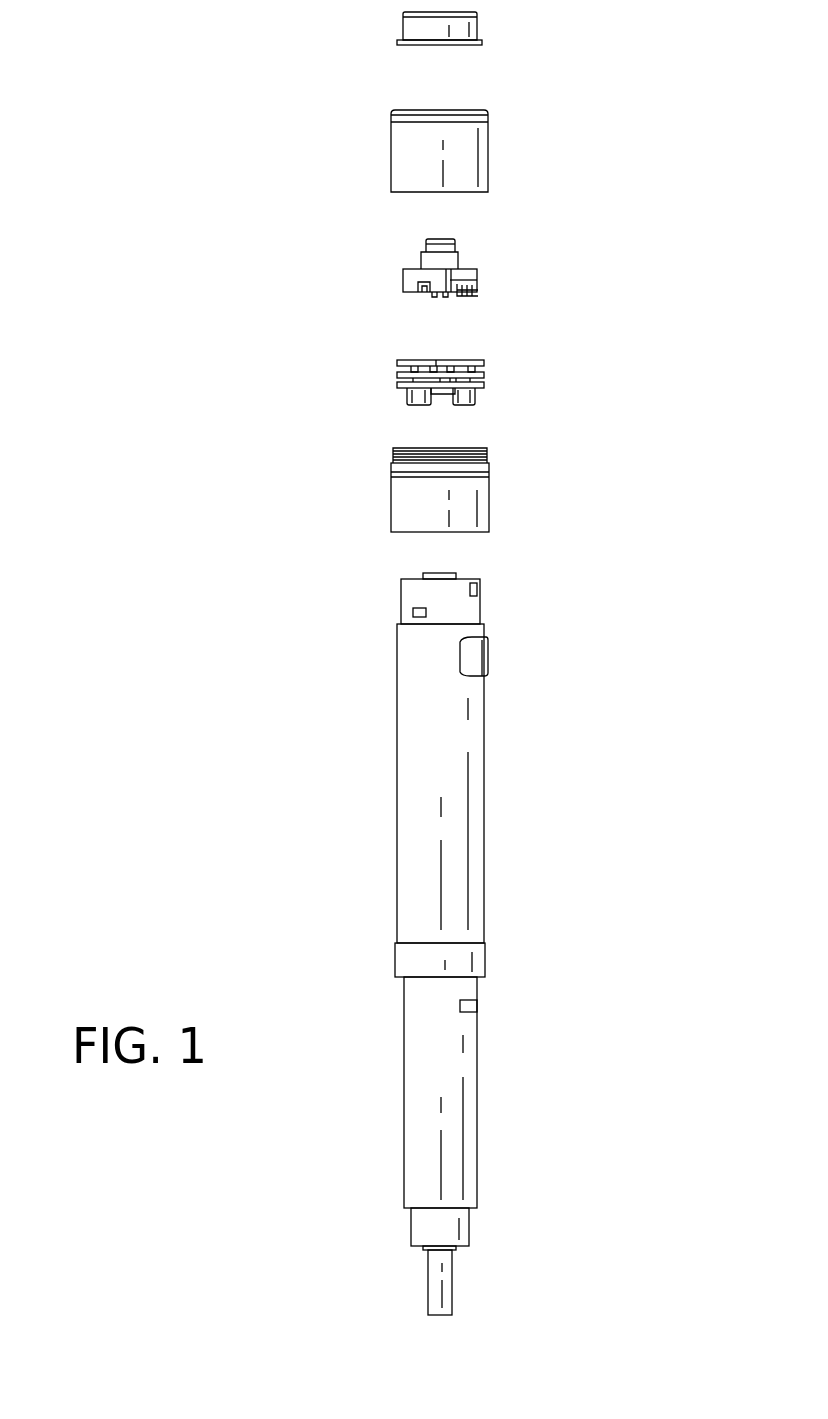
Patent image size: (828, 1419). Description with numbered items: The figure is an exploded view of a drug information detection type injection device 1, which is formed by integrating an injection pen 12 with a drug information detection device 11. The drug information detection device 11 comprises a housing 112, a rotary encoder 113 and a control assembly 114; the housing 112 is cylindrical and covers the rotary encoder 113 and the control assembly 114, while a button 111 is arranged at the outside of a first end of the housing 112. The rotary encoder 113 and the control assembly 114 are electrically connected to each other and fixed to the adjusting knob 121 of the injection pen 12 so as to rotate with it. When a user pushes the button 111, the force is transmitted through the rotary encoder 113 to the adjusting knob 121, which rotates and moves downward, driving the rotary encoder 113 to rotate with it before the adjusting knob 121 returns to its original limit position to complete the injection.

The drug information detection type injection device 1 is at (240, 258).
The drug information detection device 11 is at (667, 50).
The button 111 is at (463, 28).
The housing 112 is at (476, 155).
The rotary encoder 113 is at (473, 278).
The control assembly 114 is at (487, 382).
The injection pen 12 is at (435, 942).
The adjusting knob 121 is at (405, 502).